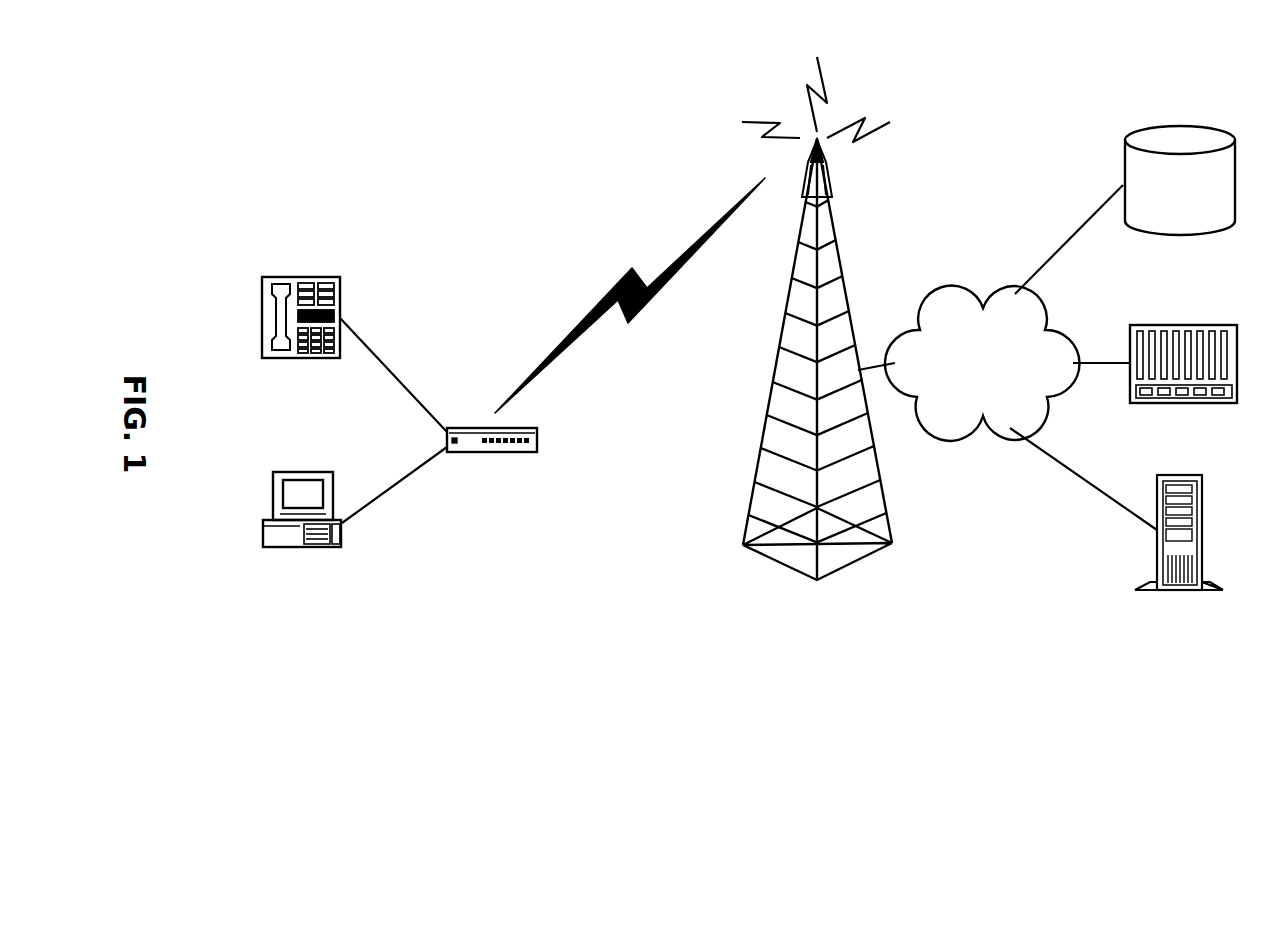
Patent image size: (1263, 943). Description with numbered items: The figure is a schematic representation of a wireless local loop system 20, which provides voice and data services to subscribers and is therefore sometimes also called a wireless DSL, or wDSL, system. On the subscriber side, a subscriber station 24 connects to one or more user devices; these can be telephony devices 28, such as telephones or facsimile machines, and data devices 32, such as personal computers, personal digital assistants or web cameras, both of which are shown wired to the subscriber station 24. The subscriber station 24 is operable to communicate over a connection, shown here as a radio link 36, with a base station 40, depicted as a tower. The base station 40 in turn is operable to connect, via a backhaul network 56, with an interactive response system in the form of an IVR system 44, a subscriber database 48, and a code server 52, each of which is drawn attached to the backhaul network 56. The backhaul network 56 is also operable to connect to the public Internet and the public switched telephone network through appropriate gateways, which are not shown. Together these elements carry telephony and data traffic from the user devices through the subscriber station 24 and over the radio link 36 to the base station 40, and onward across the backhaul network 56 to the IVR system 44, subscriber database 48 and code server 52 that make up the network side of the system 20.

The wireless local loop system 20 is at (644, 666).
The subscriber station 24 is at (492, 456).
The telephony devices 28 is at (301, 333).
The data devices 32 is at (302, 525).
The radio link 36 is at (630, 295).
The base station 40 is at (817, 336).
The IVR system 44 is at (1183, 380).
The subscriber database 48 is at (1180, 180).
The code server 52 is at (1179, 548).
The backhaul network 56 is at (982, 363).